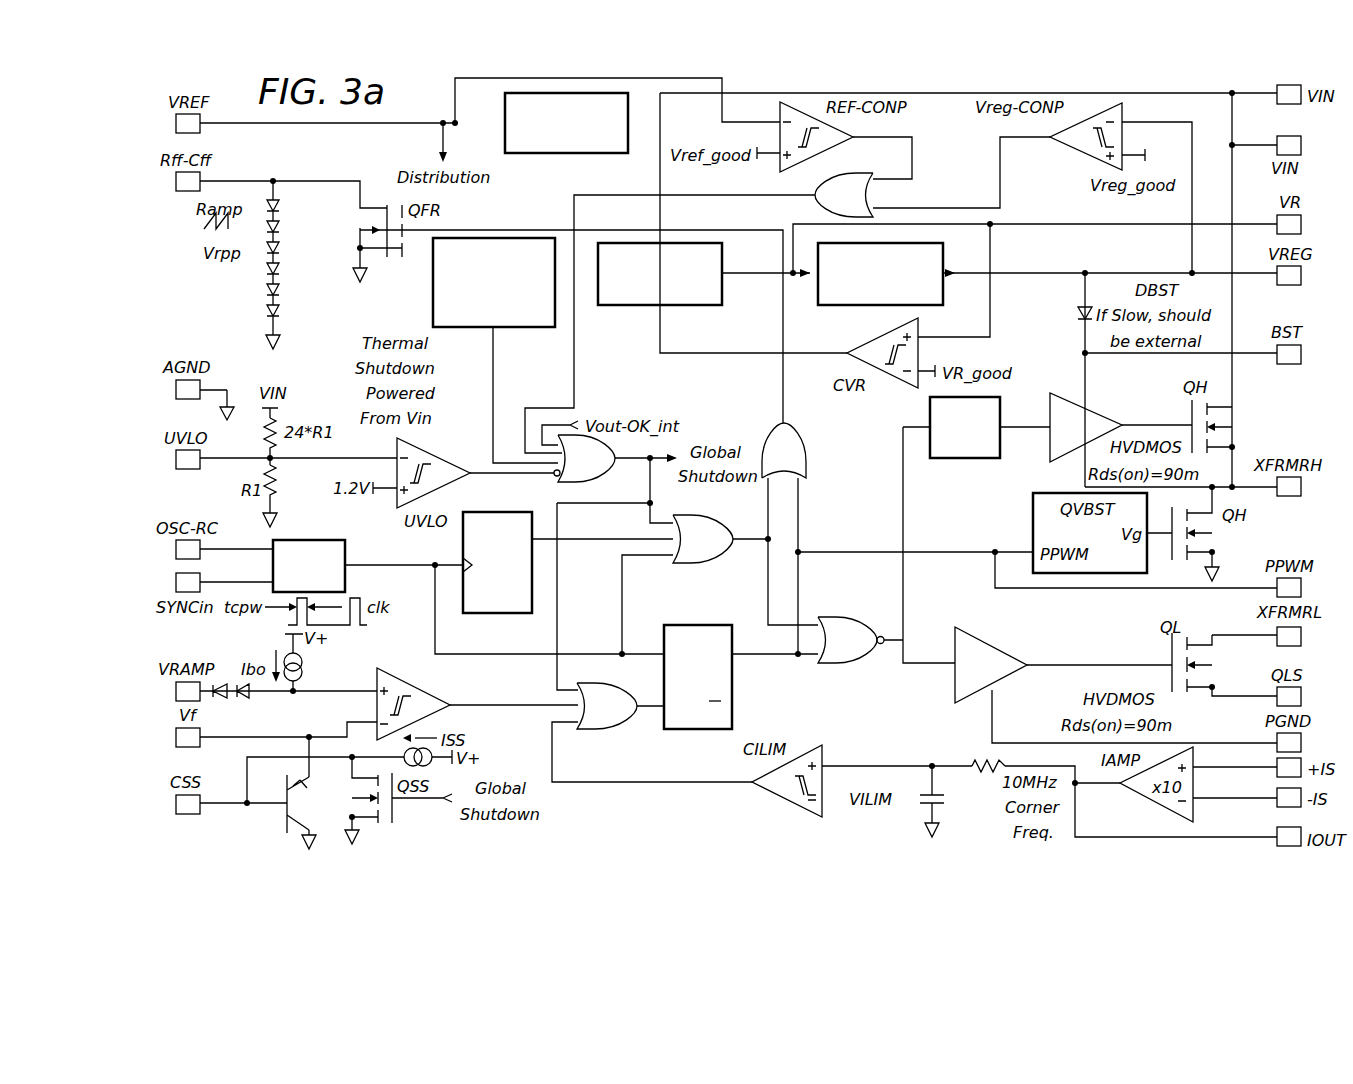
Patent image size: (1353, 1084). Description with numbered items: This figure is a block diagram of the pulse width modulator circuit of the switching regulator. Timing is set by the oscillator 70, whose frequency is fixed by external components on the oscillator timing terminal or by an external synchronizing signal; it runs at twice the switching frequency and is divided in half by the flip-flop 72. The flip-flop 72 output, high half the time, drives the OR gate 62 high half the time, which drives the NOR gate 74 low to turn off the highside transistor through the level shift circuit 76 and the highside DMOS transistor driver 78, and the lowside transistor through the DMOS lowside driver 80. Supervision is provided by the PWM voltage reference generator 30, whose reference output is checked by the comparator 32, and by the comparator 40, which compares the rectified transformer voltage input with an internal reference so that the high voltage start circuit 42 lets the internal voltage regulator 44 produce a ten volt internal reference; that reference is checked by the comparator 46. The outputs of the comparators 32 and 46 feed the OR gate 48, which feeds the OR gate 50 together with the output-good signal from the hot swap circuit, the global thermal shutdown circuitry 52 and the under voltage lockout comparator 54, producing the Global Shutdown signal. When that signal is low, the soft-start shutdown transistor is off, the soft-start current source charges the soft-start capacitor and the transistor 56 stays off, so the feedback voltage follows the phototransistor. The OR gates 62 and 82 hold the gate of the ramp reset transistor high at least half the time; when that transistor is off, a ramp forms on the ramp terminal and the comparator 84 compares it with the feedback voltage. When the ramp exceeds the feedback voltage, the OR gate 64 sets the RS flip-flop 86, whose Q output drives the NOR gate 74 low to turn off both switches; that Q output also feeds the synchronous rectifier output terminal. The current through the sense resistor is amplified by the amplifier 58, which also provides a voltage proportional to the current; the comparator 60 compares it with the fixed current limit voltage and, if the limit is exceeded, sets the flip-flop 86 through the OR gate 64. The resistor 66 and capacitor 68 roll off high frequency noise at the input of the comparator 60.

The PWM voltage reference generator 30 is at (592, 153).
The comparator 32 is at (807, 103).
The comparator 40 is at (893, 383).
The high voltage start circuit 42 is at (641, 307).
The internal voltage regulator 44 is at (860, 307).
The comparator 46 is at (1075, 148).
The OR gate 48 is at (870, 205).
The OR gate 50 is at (580, 483).
The global thermal shutdown circuitry 52 is at (516, 327).
The comparator 54 is at (463, 467).
The transistor 56 is at (287, 820).
The amplifier 58 is at (1147, 800).
The comparator 60 is at (780, 798).
The OR gate 62 is at (720, 561).
The OR gate 64 is at (593, 730).
The resistor 66 is at (973, 763).
The capacitor 68 is at (920, 807).
The oscillator 70 is at (347, 543).
The flip-flop 72 is at (518, 615).
The NOR gate 74 is at (833, 618).
The level shift circuit 76 is at (968, 458).
The highside DMOS transistor driver 78 is at (1073, 393).
The DMOS lowside driver 80 is at (997, 647).
The OR gate 82 is at (810, 462).
The comparator 84 is at (430, 692).
The RS flip-flop 86 is at (732, 677).